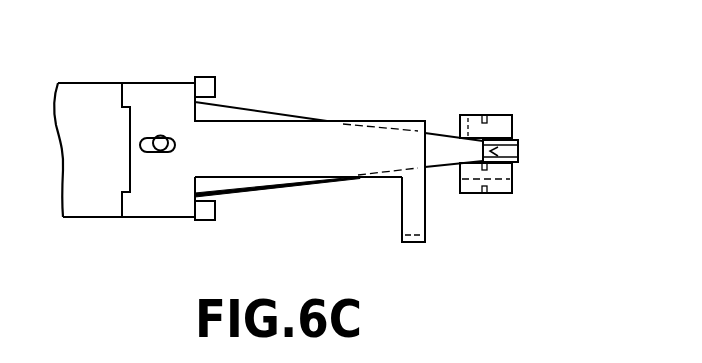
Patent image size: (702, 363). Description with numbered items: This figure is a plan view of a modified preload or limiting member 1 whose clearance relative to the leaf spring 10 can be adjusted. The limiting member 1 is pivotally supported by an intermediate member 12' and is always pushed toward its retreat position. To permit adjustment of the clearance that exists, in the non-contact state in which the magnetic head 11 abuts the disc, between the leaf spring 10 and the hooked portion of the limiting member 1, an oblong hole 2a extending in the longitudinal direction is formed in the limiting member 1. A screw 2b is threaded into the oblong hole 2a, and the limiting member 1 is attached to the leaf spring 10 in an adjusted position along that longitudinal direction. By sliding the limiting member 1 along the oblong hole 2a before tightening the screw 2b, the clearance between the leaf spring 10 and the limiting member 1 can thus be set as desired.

The intermediate member 12' is at (228, 122).
The limiting member 1 is at (267, 137).
The leaf spring 10 is at (378, 120).
The magnetic head 11 is at (512, 127).
The oblong hole 2a is at (159, 151).
The screw 2b is at (176, 146).